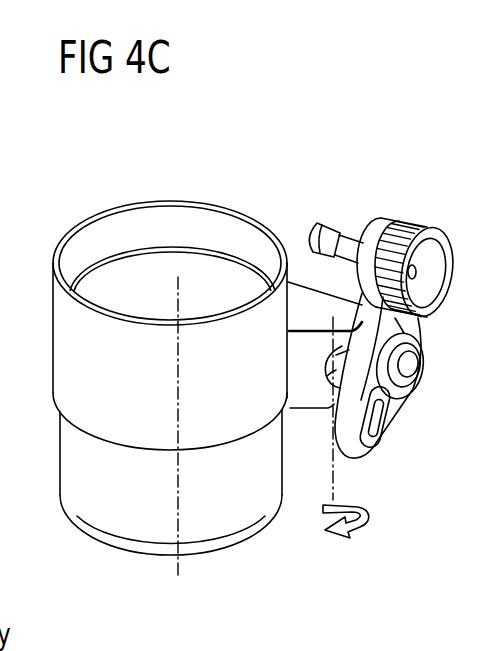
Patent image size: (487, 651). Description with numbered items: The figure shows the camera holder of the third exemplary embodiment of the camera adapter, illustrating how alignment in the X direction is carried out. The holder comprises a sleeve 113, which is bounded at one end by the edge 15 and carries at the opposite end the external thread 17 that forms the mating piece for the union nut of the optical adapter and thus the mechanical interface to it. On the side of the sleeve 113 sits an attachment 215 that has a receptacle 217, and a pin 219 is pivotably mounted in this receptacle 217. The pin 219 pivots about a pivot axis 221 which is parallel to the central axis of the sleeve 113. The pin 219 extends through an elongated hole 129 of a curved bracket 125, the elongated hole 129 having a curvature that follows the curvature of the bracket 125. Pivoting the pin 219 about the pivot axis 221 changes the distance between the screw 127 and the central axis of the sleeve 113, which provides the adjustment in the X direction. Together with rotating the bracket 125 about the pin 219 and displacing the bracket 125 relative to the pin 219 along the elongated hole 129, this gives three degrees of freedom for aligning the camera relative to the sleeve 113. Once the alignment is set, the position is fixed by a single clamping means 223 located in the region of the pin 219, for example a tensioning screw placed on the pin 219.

The edge 15 is at (93, 217).
The external thread 17 is at (207, 546).
The sleeve 113 is at (136, 525).
The curved bracket 125 is at (365, 445).
The screw 127 is at (415, 222).
The elongated hole 129 is at (376, 417).
The attachment 215 is at (307, 395).
The receptacle 217 is at (327, 376).
The pin 219 is at (325, 361).
The pivot axis 221 is at (331, 493).
The clamping means 223 is at (411, 370).